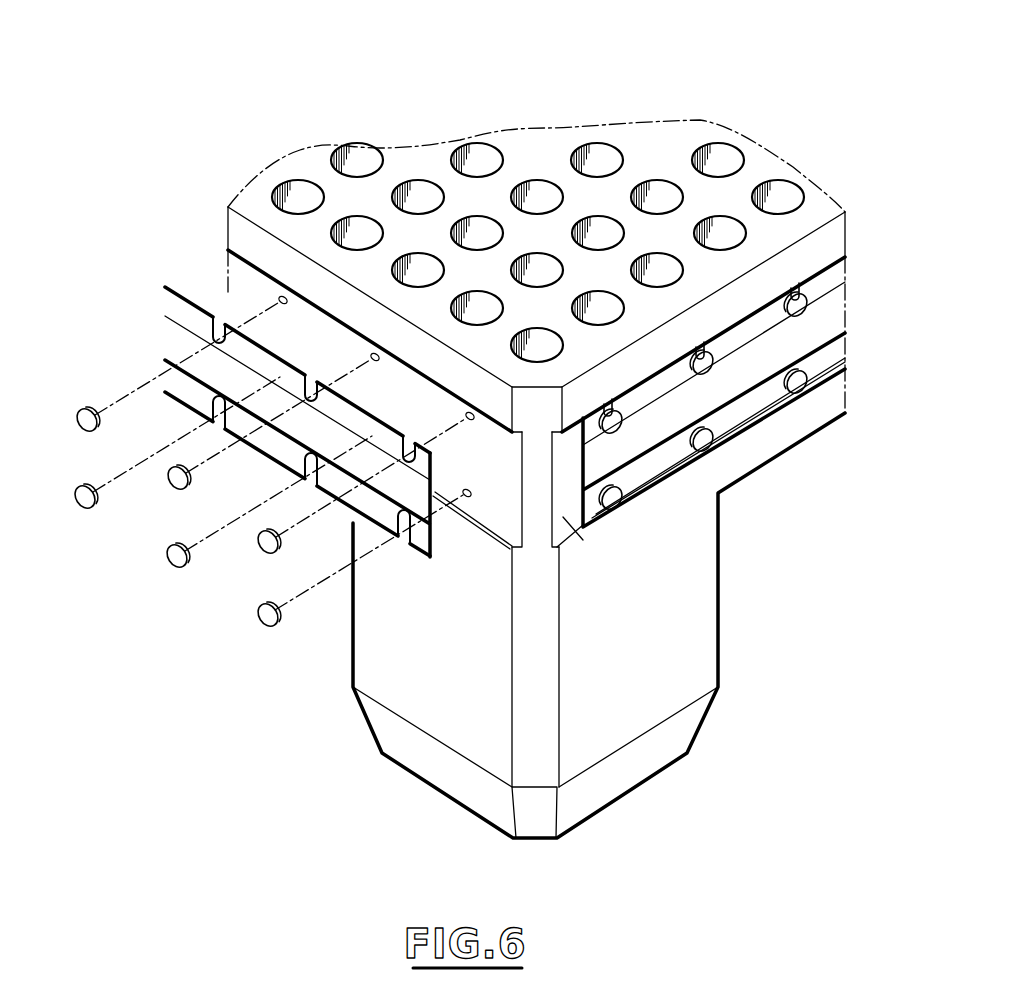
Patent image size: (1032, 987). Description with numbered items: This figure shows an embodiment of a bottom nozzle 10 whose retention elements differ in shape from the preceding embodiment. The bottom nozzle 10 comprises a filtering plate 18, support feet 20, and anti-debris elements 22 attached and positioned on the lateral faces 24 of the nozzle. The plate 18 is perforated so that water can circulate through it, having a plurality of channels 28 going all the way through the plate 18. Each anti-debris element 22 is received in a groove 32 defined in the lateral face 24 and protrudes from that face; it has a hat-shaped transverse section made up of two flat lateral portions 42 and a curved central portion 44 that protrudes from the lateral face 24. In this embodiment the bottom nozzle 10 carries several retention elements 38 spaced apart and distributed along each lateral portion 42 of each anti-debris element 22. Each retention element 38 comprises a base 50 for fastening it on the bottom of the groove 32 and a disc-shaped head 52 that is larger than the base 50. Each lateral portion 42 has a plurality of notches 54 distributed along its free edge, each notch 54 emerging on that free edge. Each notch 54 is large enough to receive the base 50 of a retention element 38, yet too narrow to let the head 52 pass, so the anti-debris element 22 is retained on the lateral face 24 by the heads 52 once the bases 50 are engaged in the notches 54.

The bottom nozzle 10 is at (748, 112).
The filtering plate 18 is at (603, 135).
The support feet 20 is at (585, 750).
The anti-debris element 22 is at (843, 305).
The lateral face 24 is at (590, 632).
The channels 28 is at (470, 162).
The groove 32 is at (487, 527).
The retention elements 38 is at (166, 568).
The lateral portion 42 is at (183, 312).
The central portion 44 is at (175, 338).
The base 50 is at (281, 609).
The head 52 is at (262, 617).
The notches 54 is at (220, 334).